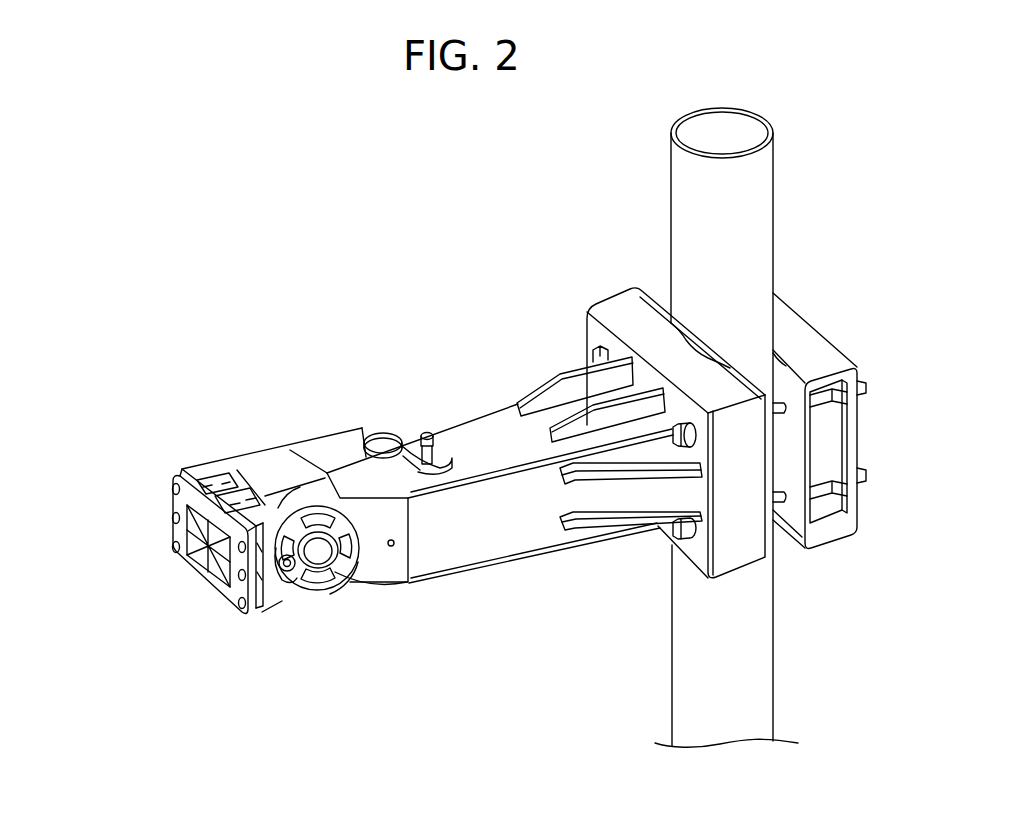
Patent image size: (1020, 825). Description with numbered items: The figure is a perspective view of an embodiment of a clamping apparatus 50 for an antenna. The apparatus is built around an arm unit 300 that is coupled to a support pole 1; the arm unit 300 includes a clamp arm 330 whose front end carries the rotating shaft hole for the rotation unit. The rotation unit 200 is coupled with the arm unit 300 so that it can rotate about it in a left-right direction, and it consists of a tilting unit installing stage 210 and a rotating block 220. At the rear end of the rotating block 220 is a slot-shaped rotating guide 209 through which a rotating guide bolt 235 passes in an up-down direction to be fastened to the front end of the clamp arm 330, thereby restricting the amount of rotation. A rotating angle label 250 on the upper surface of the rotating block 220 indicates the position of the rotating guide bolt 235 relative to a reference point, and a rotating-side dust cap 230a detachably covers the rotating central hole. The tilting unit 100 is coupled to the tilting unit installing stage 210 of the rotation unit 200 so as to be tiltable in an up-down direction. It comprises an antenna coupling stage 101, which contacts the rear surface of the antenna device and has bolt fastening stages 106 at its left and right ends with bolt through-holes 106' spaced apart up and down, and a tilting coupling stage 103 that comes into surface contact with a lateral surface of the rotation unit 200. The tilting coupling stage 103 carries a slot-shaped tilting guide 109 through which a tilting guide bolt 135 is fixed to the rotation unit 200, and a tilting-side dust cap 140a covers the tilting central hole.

The support pole 1 is at (767, 211).
The clamping apparatus for an antenna 50 is at (283, 250).
The tilting unit 100 is at (168, 583).
The antenna coupling stage 101 is at (203, 581).
The bolt fastening stages 106 is at (180, 485).
The bolt through-holes 106' is at (206, 623).
The tilting guide 109 is at (293, 586).
The tilting guide bolt 135 is at (284, 577).
The tilting-side dust cap 140a is at (318, 553).
The tilting coupling stage 103 is at (352, 580).
The rotation unit 200 is at (253, 430).
The tilting unit installing stage 210 is at (255, 467).
The rotating block 220 is at (333, 447).
The rotating-side dust cap 230a is at (379, 446).
The rotating angle label 250 is at (406, 439).
The rotating guide bolt 235 is at (430, 435).
The rotating guide 209 is at (442, 440).
The arm unit 300 is at (606, 278).
The clamp arm 330 is at (523, 532).